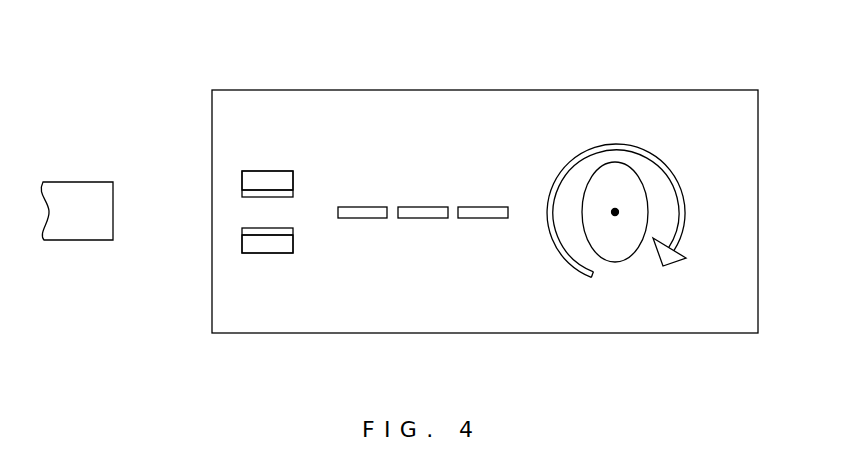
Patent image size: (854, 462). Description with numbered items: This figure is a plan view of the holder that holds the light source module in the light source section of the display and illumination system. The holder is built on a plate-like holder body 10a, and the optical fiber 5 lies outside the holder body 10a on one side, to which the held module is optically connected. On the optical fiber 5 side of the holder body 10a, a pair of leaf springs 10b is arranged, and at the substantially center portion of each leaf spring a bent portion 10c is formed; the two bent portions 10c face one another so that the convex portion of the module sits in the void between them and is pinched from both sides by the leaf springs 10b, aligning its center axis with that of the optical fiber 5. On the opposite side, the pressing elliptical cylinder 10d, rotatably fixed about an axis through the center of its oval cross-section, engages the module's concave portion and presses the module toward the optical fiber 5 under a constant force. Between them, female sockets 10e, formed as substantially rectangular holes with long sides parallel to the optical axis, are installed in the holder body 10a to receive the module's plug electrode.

The optical fiber 5 is at (82, 190).
The holder body 10a is at (452, 97).
The leaf spring 10b is at (247, 198).
The bent portion 10c is at (258, 176).
The pressing elliptical cylinder 10d is at (613, 175).
The female socket 10e is at (477, 218).